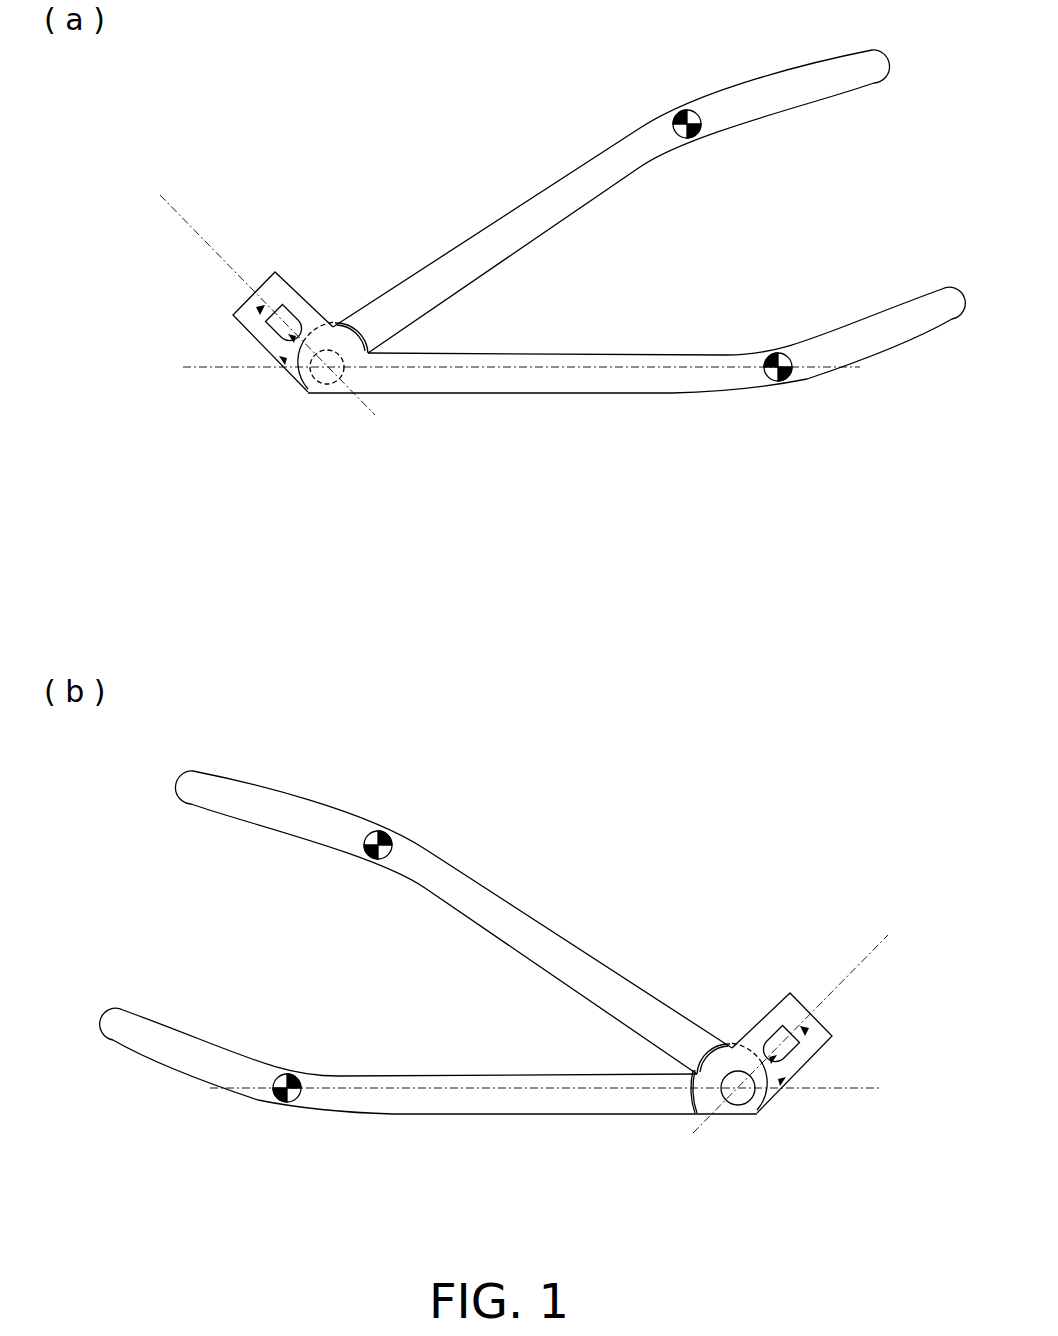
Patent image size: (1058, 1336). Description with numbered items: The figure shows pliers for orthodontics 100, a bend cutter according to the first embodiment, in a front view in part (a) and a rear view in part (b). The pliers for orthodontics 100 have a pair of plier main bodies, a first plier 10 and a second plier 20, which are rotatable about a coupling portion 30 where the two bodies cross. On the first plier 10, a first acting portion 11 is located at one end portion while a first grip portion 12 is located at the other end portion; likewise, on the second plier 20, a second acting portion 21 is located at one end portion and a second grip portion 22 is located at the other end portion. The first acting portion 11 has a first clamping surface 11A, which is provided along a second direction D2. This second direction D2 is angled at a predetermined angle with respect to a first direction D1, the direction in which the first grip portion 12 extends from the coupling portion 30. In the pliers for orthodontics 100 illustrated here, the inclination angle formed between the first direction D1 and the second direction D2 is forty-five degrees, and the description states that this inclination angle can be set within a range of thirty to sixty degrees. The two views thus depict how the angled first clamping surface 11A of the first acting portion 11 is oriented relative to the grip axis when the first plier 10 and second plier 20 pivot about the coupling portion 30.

The pliers for orthodontics 100 is at (212, 132).
The first plier 10 is at (428, 394).
The first acting portion 11 is at (305, 298).
The first clamping surface 11A is at (258, 312).
The first grip portion 12 is at (779, 382).
The second plier 20 is at (472, 286).
The second acting portion 21 is at (282, 360).
The second grip portion 22 is at (686, 110).
The coupling portion 30 is at (300, 384).
The first direction D1 is at (543, 369).
The second direction D2 is at (360, 403).